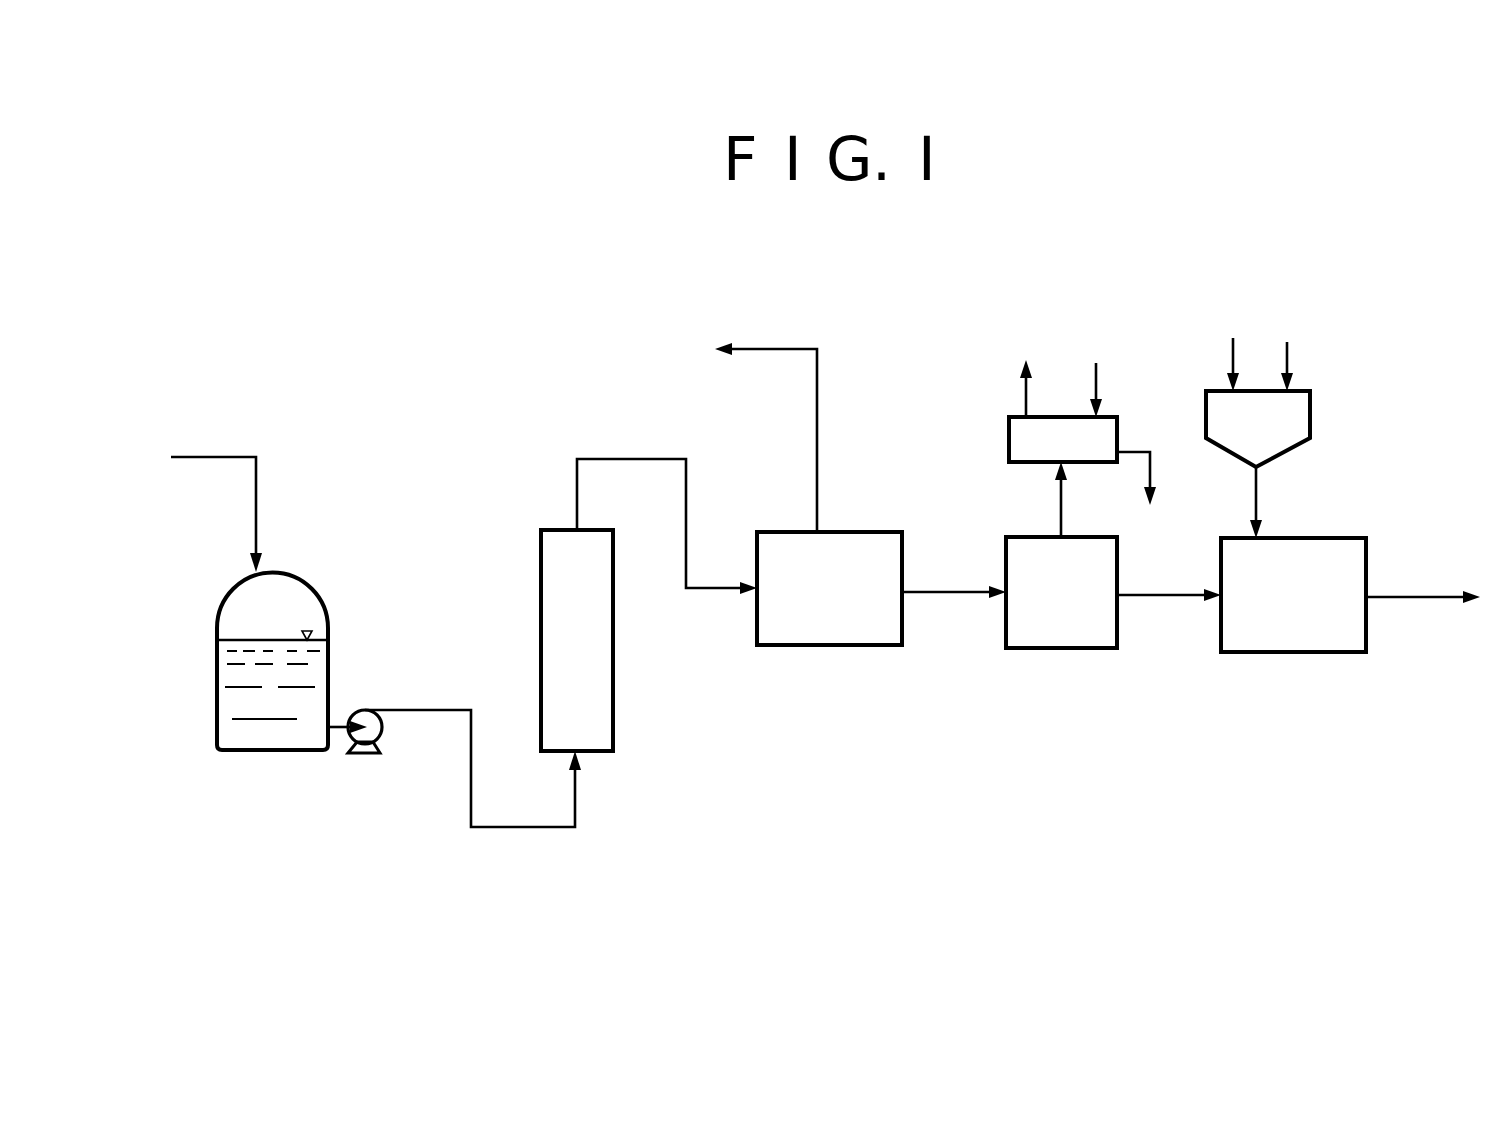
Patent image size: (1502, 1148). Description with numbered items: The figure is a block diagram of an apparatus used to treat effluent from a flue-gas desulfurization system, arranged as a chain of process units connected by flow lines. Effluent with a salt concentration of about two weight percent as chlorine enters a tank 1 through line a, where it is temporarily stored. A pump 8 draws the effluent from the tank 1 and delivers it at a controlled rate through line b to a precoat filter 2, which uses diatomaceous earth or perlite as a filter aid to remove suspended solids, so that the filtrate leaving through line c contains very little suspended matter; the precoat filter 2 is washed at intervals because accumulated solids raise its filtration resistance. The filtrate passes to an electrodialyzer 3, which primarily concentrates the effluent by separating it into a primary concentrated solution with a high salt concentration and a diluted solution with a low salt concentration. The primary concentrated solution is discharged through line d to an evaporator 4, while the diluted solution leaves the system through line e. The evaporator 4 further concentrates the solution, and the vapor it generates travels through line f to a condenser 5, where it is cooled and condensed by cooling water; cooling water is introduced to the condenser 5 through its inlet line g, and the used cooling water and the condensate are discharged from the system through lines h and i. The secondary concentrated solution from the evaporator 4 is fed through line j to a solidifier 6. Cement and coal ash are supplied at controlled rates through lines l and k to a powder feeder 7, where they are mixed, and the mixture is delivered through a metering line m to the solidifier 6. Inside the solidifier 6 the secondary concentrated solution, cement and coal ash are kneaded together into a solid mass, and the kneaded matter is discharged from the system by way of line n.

The tank 1 is at (272, 752).
The precoat filter 2 is at (613, 740).
The electrodialyzer 3 is at (792, 646).
The evaporator 4 is at (1047, 649).
The condenser 5 is at (1008, 440).
The solidifier 6 is at (1265, 653).
The powder feeder 7 is at (1312, 418).
The pump 8 is at (370, 757).
The line a is at (212, 456).
The line b is at (420, 710).
The line c is at (633, 458).
The line d is at (945, 595).
The line e is at (818, 435).
The line f is at (1063, 500).
The line g is at (1098, 385).
The line h is at (1022, 392).
The line i is at (1152, 473).
The line j is at (1158, 598).
The line k is at (1290, 356).
The line l is at (1230, 356).
The metering line m is at (1258, 500).
The line n is at (1422, 600).